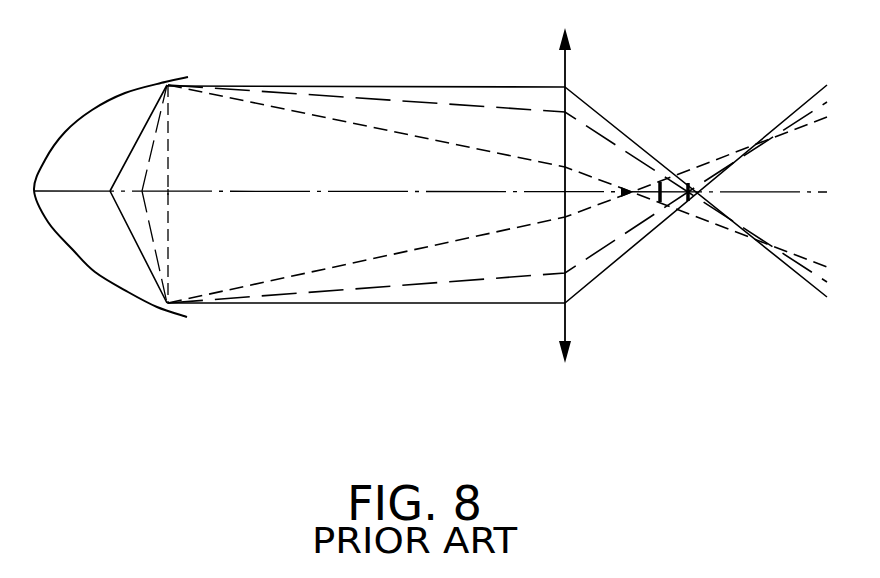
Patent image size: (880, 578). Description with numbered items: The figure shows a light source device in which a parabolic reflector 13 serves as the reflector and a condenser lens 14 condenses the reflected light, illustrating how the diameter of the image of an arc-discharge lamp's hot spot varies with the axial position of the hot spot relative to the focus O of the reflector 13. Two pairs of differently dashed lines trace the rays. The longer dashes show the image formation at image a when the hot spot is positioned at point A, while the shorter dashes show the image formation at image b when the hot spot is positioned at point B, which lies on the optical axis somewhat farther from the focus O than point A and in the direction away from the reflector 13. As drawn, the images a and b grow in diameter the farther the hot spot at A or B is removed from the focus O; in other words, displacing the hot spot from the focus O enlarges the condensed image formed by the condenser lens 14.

The parabolic reflector 13 is at (95, 273).
The condenser lens 14 is at (566, 312).
The focus of the reflector O is at (129, 194).
The point A is at (142, 188).
The point B is at (168, 193).
The image of the hot spot at a is at (683, 199).
The image of the hot spot at b is at (655, 201).